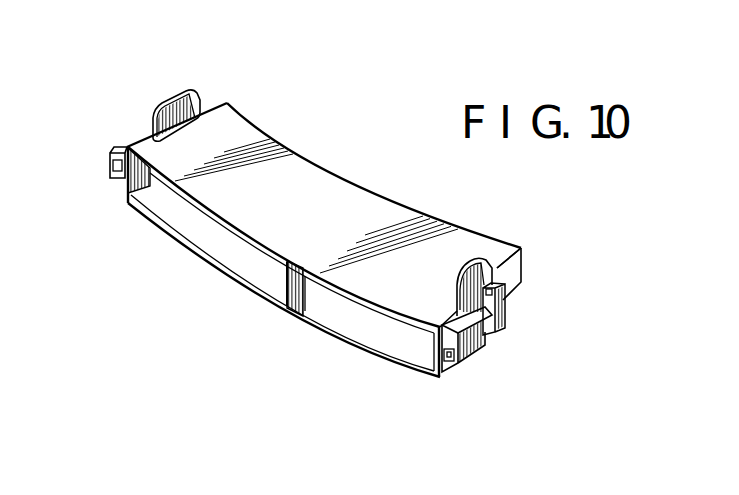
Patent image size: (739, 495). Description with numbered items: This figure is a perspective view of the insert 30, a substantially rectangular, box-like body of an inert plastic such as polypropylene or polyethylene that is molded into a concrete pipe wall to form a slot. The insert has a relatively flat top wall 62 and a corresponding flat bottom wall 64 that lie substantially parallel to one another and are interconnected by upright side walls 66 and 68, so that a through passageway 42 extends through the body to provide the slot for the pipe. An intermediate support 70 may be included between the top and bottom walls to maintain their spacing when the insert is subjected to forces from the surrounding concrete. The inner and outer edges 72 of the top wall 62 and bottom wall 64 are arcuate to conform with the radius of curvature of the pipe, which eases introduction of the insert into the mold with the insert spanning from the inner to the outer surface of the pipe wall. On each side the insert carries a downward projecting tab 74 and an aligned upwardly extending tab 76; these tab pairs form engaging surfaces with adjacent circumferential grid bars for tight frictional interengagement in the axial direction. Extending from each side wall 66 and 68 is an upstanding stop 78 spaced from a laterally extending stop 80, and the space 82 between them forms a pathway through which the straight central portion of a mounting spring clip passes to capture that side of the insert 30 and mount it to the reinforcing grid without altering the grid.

The insert 30 is at (320, 143).
The through passageway 42 is at (260, 270).
The top wall 62 is at (343, 197).
The bottom wall 64 is at (362, 326).
The side wall 66 is at (520, 292).
The side wall 68 is at (127, 182).
The intermediate support 70 is at (298, 308).
The inner and outer edges 72 is at (490, 230).
The downward projecting tab 74 is at (476, 356).
The upwardly extending tab 76 is at (460, 281).
The upstanding stop 78 is at (500, 306).
The laterally extending stop 80 is at (478, 335).
The space 82 is at (526, 252).